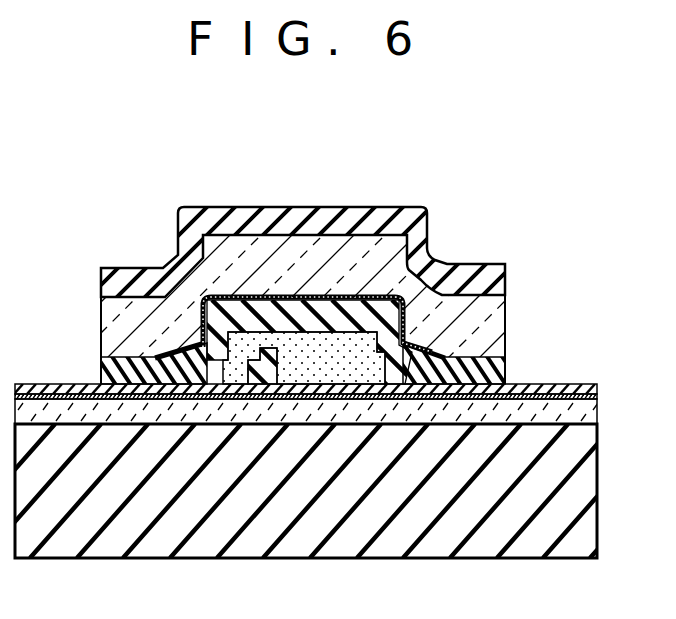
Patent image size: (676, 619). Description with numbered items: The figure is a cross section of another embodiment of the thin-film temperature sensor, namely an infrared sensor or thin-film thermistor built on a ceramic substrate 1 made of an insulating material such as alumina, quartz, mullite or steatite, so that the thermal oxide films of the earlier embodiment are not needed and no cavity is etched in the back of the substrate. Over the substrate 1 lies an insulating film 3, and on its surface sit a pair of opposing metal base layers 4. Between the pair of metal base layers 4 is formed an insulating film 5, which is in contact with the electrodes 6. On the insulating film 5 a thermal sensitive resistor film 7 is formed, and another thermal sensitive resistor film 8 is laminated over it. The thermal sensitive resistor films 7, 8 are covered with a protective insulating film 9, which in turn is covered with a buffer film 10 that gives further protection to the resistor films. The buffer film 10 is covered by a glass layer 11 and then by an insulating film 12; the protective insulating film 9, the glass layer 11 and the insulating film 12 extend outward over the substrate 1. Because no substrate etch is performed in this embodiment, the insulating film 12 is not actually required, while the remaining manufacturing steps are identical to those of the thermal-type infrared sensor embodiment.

The substrate 1 is at (575, 517).
The insulating film 3 is at (597, 412).
The metal base layers 4 is at (579, 394).
The insulating film 5 is at (432, 348).
The electrodes 6 is at (526, 384).
The thermal sensitive resistor film 7 is at (445, 325).
The thermal sensitive resistor film 8 is at (435, 297).
The protective insulating film 9 is at (120, 375).
The buffer film 10 is at (174, 351).
The glass layer 11 is at (101, 308).
The insulating film 12 is at (170, 262).